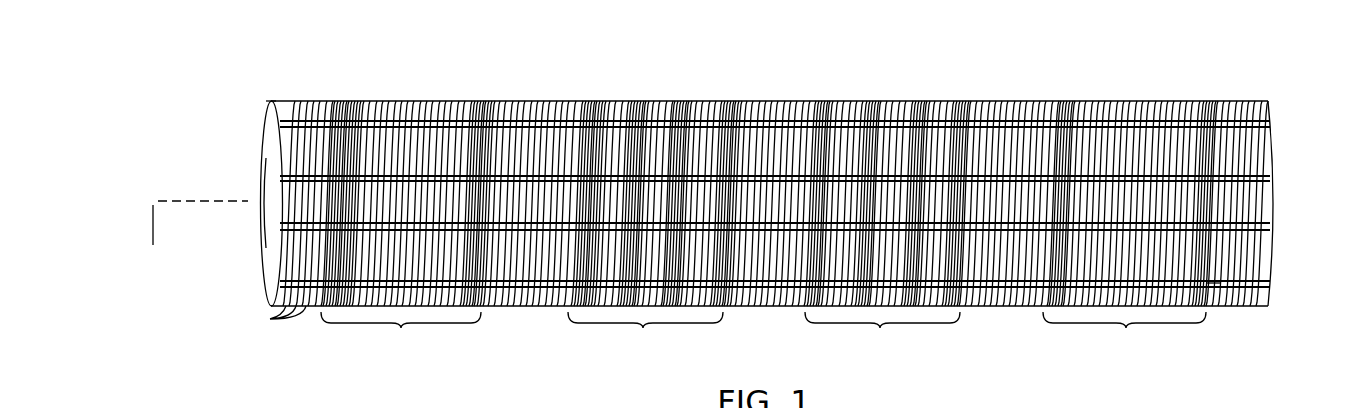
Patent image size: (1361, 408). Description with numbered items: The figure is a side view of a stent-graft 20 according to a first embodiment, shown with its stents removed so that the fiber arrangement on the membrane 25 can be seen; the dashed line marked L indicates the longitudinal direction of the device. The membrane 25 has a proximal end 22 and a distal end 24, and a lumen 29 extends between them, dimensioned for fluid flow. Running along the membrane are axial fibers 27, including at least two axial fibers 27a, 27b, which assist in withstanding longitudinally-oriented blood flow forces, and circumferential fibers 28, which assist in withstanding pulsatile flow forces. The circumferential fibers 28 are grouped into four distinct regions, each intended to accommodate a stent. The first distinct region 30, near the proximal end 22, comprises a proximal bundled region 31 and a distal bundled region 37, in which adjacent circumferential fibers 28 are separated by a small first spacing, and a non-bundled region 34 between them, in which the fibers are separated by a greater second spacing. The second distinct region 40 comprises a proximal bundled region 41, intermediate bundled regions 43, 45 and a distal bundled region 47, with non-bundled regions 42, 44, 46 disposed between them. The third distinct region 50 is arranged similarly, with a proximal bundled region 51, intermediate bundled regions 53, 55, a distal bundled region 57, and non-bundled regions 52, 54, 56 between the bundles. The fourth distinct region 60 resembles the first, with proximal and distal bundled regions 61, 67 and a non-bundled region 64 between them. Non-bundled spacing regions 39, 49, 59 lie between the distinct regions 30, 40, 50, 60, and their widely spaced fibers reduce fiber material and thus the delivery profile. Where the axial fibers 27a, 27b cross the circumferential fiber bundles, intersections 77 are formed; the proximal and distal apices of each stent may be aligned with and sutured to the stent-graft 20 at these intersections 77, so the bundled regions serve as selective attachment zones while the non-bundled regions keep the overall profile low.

The stent-graft 20 is at (506, 72).
The proximal end 22 is at (269, 82).
The distal end 24 is at (1254, 85).
The membrane 25 is at (256, 101).
The axial fiber 27 is at (1270, 170).
The axial fiber 27a is at (1250, 112).
The axial fiber 27b is at (1252, 122).
The circumferential fiber 28 is at (262, 311).
The lumen 29 is at (255, 158).
The first distinct region 30 is at (401, 334).
The proximal bundled region 31 is at (333, 93).
The non-bundled region 34 is at (393, 93).
The distal bundled region 37 is at (468, 93).
The non-bundled spacing region 39 is at (523, 306).
The second distinct region 40 is at (645, 334).
The proximal bundled region 41 is at (577, 93).
The non-bundled region 42 is at (603, 93).
The intermediate bundled region 43 is at (627, 93).
The non-bundled region 44 is at (647, 93).
The intermediate bundled region 45 is at (670, 93).
The non-bundled region 46 is at (692, 93).
The distal bundled region 47 is at (713, 93).
The non-bundled spacing region 49 is at (745, 306).
The third distinct region 50 is at (882, 334).
The proximal bundled region 51 is at (816, 93).
The non-bundled region 52 is at (840, 93).
The intermediate bundled region 53 is at (862, 93).
The non-bundled region 54 is at (883, 93).
The intermediate bundled region 55 is at (907, 93).
The non-bundled region 56 is at (928, 93).
The distal bundled region 57 is at (952, 93).
The non-bundled spacing region 59 is at (1002, 306).
The fourth distinct region 60 is at (1124, 334).
The proximal bundled region 61 is at (1054, 93).
The non-bundled region 64 is at (1140, 93).
The distal bundled region 67 is at (1200, 93).
The intersection 77 is at (1214, 278).
The longitudinal axis L is at (196, 234).